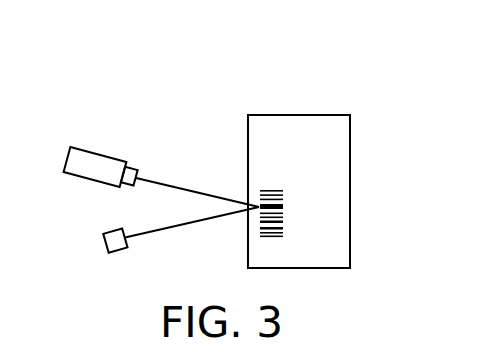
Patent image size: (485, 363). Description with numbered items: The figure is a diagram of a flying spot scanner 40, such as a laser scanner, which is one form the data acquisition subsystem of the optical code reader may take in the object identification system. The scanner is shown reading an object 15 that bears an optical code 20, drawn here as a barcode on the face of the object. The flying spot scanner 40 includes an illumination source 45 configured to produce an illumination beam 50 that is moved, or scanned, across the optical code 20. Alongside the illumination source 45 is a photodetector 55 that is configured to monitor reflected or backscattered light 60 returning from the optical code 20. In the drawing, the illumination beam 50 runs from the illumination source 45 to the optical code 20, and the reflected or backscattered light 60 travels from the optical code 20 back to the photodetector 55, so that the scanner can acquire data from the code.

The object 15 is at (313, 174).
The optical code 20 is at (282, 228).
The flying spot scanner 40 is at (128, 117).
The illumination source 45 is at (104, 156).
The illumination beam 50 is at (195, 192).
The photodetector 55 is at (110, 228).
The reflected or backscattered light 60 is at (201, 220).